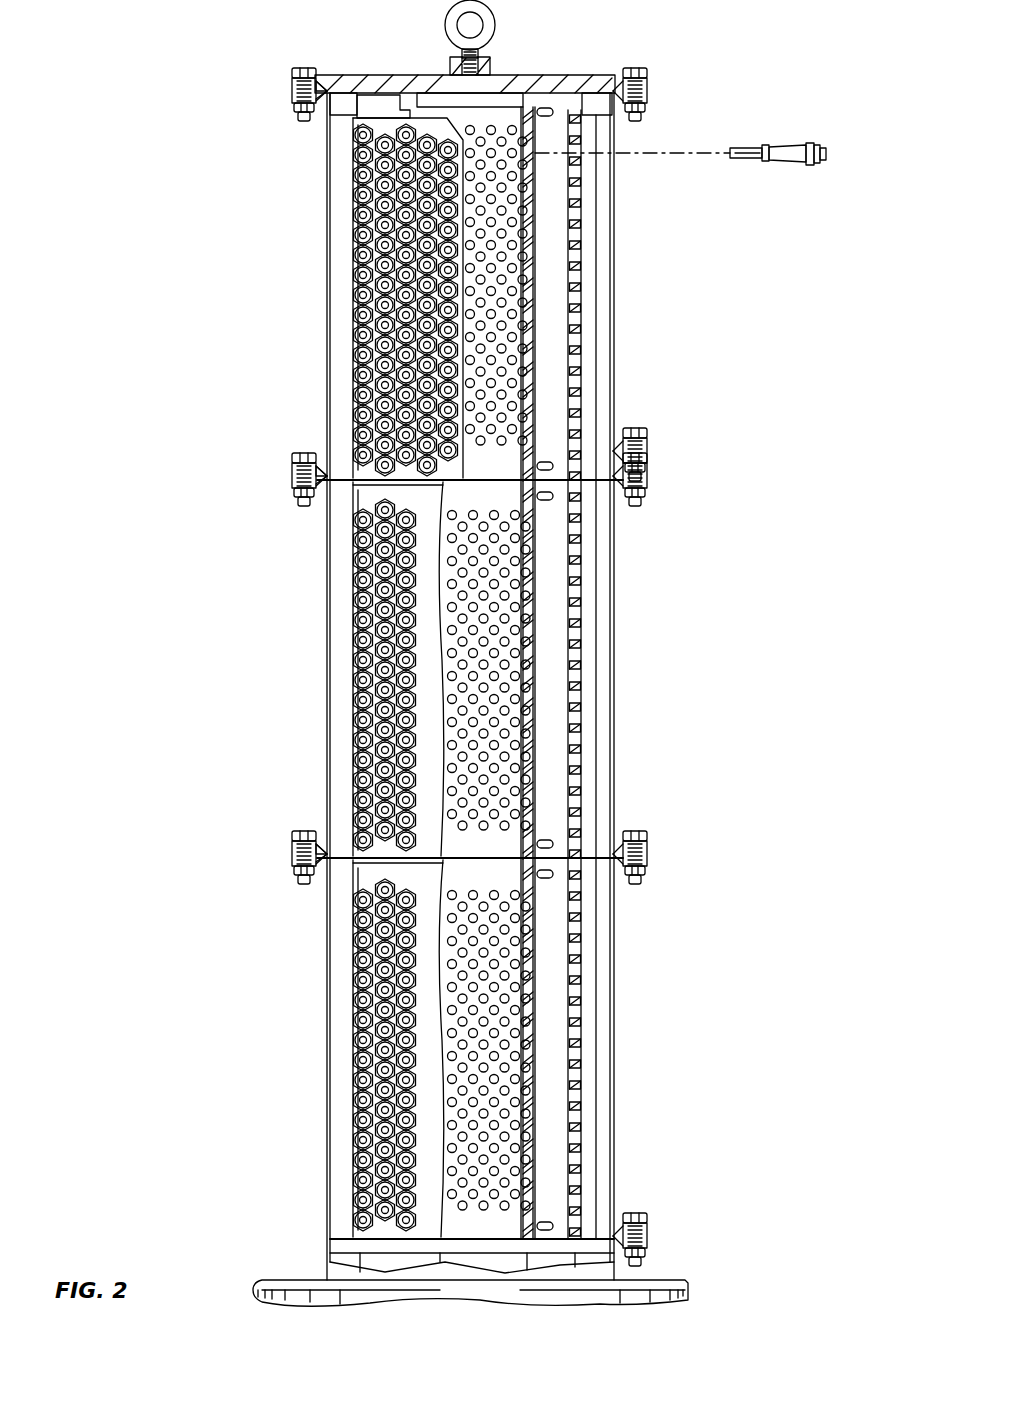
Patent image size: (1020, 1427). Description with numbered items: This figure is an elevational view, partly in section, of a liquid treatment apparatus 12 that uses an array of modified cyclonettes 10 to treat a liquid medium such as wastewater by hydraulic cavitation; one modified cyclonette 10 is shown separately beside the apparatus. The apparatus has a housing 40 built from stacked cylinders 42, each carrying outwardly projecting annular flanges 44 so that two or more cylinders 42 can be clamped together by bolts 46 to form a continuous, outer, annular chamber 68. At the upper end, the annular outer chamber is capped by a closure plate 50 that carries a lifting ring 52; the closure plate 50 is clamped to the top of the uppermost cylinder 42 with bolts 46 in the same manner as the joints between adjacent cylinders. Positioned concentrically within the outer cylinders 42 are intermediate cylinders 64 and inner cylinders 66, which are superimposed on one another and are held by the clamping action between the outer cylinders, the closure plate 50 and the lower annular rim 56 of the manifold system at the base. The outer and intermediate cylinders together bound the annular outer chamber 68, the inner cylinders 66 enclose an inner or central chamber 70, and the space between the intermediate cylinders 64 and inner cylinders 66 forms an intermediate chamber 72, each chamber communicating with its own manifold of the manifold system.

The modified cyclonette 10 is at (775, 140).
The liquid treatment apparatus 12 is at (173, 165).
The housing 40 is at (322, 617).
The cylinders 42 is at (330, 282).
The annular flanges 44 is at (292, 481).
The bolts 46 is at (301, 70).
The closure plate 50 is at (533, 76).
The lifting ring 52 is at (494, 22).
The lower annular rim 56 is at (292, 1243).
The intermediate cylinders 64 is at (578, 362).
The inner cylinders 66 is at (535, 660).
The annular outer chamber 68 is at (595, 717).
The inner or central chamber 70 is at (478, 1228).
The intermediate chamber 72 is at (550, 602).